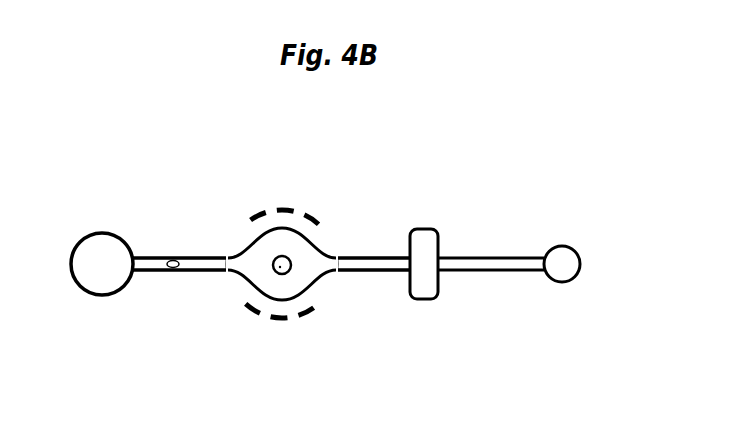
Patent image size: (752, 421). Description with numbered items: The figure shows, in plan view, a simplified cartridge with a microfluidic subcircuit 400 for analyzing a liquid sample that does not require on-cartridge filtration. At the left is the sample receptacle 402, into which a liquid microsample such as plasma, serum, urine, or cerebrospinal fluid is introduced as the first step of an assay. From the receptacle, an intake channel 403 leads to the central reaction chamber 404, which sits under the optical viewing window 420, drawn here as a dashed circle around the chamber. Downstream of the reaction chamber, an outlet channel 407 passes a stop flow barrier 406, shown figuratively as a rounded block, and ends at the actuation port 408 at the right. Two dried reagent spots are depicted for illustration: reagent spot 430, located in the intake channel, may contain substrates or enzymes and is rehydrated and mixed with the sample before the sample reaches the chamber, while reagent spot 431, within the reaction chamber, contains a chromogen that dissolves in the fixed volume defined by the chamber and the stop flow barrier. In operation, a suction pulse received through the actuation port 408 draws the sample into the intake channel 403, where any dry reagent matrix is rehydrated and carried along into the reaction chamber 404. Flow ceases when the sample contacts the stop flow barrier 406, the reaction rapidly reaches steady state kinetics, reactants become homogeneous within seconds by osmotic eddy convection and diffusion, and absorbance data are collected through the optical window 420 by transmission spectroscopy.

The microfluidic subcircuit 400 is at (354, 253).
The sample receptacle 402 is at (102, 288).
The intake channel 403 is at (197, 255).
The reaction chamber 404 is at (283, 290).
The stop flow barrier 406 is at (425, 229).
The outlet channel 407 is at (379, 256).
The actuation port 408 is at (562, 250).
The optical viewing window 420 is at (366, 333).
The reagent spot 430 is at (169, 256).
The reagent spot 431 is at (272, 267).